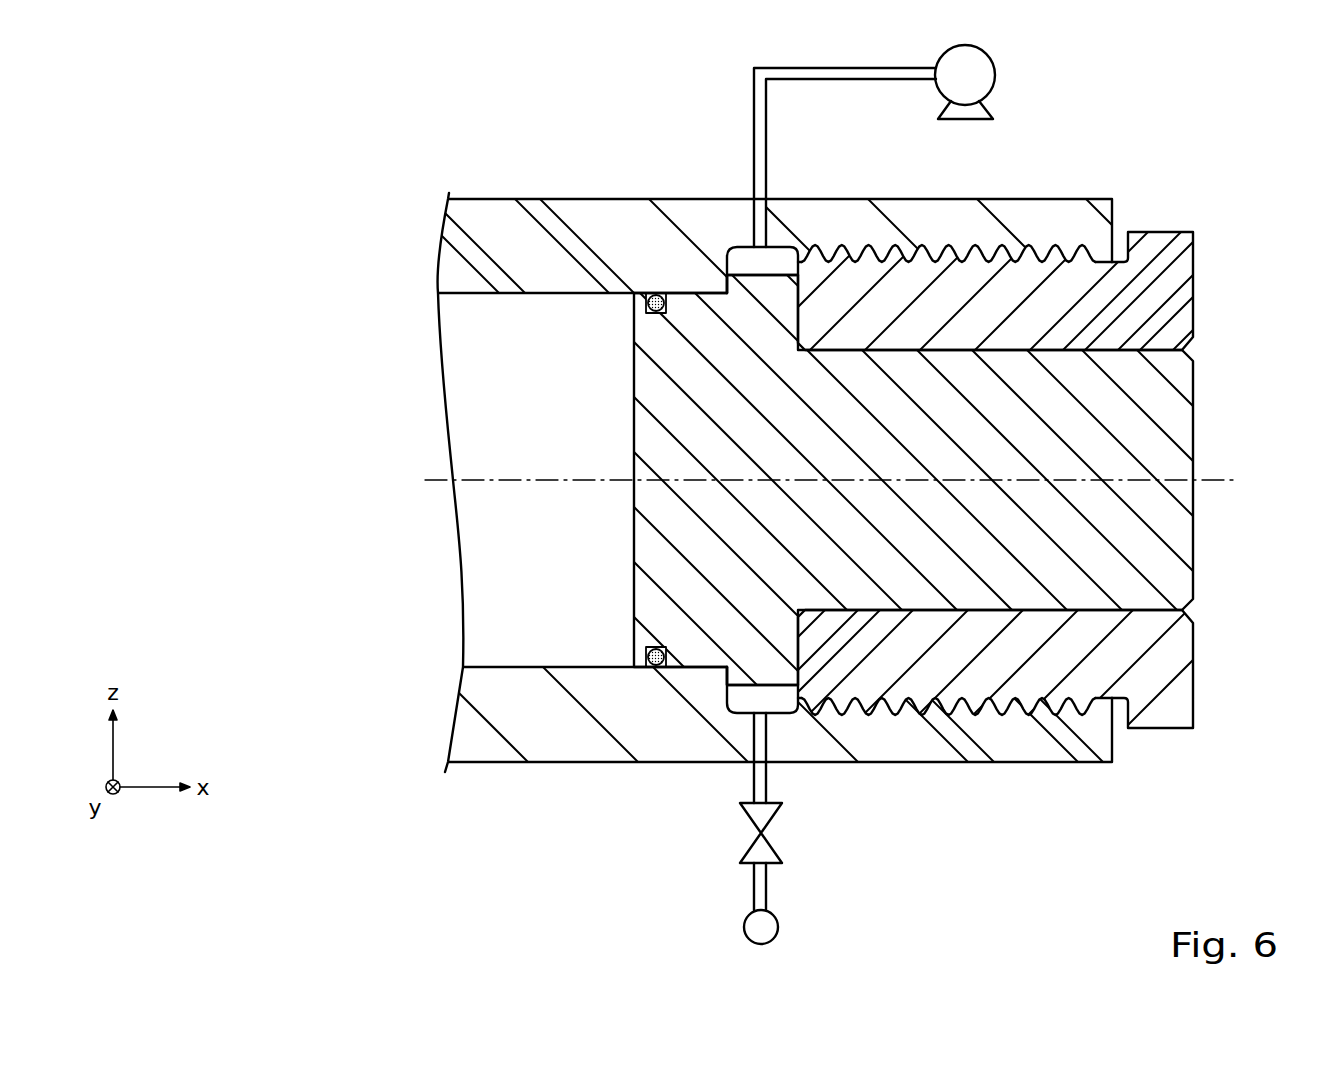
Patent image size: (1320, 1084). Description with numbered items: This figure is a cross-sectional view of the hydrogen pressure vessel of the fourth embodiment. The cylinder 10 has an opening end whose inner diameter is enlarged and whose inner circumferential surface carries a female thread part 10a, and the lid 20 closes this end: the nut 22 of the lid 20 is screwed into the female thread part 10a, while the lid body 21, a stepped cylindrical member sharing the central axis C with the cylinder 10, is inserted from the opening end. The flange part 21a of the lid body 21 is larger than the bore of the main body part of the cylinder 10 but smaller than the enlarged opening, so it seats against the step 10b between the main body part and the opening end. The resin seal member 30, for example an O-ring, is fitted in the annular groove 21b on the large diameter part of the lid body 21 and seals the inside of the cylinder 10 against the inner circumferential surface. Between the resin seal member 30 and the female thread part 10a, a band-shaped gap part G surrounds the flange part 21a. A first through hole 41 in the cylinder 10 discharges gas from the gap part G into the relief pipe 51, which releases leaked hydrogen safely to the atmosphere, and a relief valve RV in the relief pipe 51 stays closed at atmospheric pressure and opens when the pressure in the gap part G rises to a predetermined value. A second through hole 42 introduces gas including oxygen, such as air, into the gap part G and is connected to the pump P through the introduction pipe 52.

The cylinder 10 is at (607, 203).
The female thread part 10a is at (858, 252).
The step 10b is at (737, 705).
The lid 20 is at (972, 542).
The lid body 21 is at (1188, 378).
The flange part 21a is at (772, 278).
The annular groove 21b is at (665, 293).
The nut 22 is at (1268, 395).
The resin seal member 30 is at (647, 305).
The through hole (first through hole) 41 is at (769, 755).
The through hole (second through hole) 42 is at (753, 227).
The relief pipe 51 is at (769, 877).
The introduction pipe 52 is at (757, 110).
The gap part G is at (747, 265).
The relief valve RV is at (785, 848).
The central axis C is at (845, 480).
The pump P is at (965, 82).